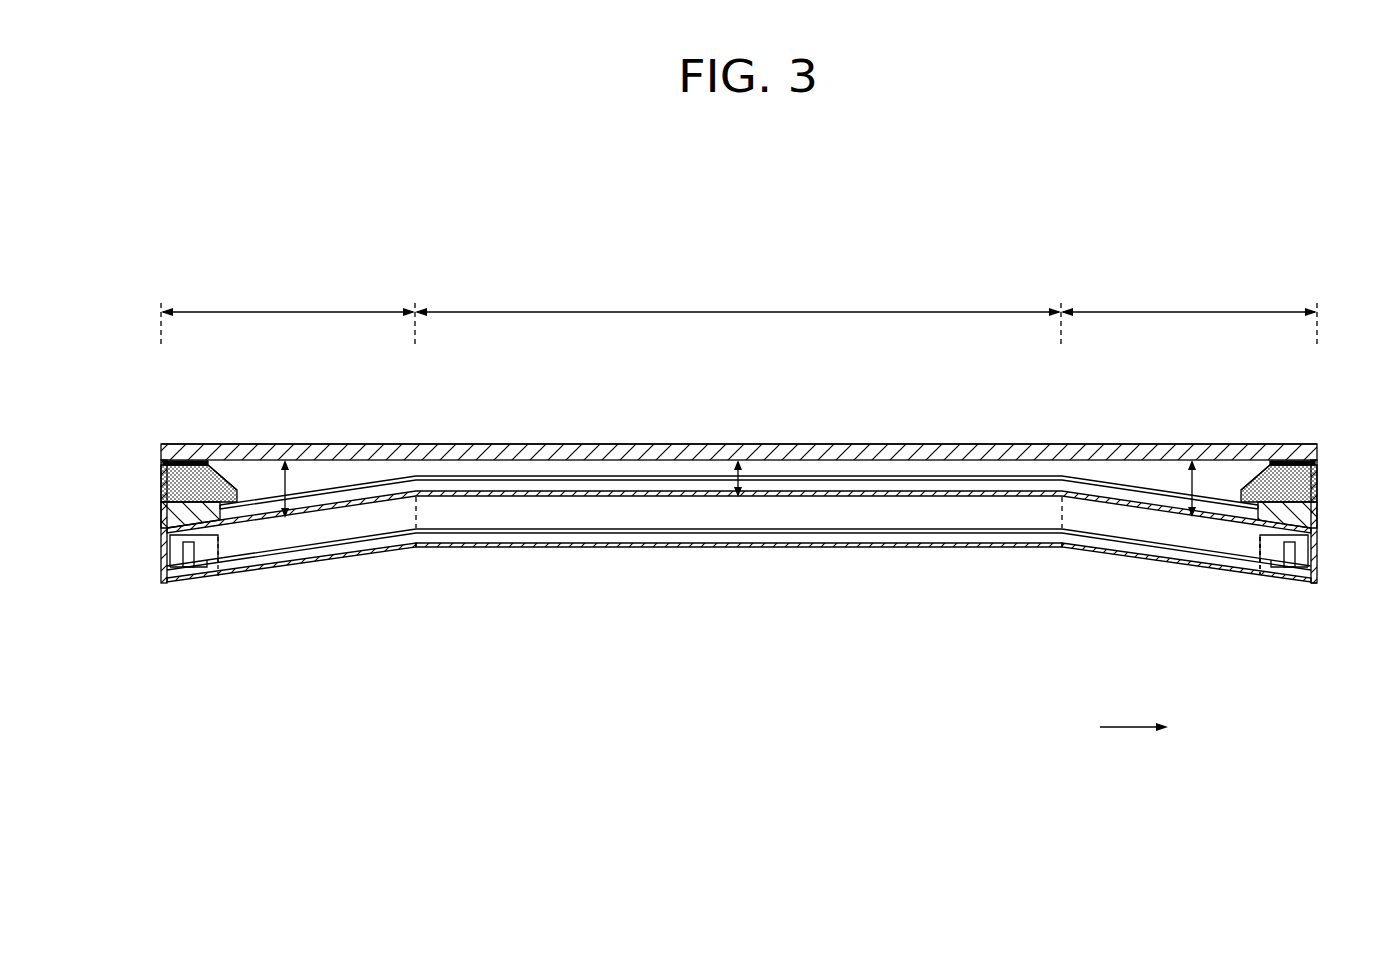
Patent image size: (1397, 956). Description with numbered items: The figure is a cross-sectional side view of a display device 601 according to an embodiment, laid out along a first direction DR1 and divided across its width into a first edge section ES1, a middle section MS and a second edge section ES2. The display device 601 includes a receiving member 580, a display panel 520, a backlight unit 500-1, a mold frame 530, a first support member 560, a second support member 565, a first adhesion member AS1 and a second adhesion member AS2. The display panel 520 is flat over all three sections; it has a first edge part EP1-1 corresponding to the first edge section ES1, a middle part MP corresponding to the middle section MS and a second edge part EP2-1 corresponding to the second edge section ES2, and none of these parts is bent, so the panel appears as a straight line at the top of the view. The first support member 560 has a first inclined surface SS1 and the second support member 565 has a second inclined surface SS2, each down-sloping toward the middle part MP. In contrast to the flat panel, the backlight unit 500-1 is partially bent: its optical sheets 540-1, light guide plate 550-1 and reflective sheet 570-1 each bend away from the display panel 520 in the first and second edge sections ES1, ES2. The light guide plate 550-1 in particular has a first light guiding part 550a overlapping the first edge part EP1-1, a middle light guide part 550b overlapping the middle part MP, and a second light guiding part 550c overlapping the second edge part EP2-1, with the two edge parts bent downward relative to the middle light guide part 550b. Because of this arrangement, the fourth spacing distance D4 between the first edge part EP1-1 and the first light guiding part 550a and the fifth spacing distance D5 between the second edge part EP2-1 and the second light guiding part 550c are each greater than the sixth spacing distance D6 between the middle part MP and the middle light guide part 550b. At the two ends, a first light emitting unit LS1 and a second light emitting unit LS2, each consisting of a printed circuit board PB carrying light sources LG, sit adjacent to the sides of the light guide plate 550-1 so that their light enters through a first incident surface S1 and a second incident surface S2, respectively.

The display device 601 is at (1285, 224).
The window / cover member 520 is at (1323, 449).
The first support member 560 is at (170, 486).
The second support member 565 is at (1308, 486).
The mold frame 530 is at (168, 518).
The receiving member 580 is at (1311, 550).
The first light guiding part 550a is at (328, 540).
The middle light guide part 550b is at (664, 515).
The second light guiding part 550c is at (1154, 553).
The optical sheets 540-1 is at (791, 478).
The light guide plate 550-1 is at (861, 516).
The reflective sheet 570-1 is at (760, 612).
The backlight unit 500-1 is at (739, 564).
The first adhesion member AS1 is at (160, 462).
The second adhesion member AS2 is at (1318, 463).
The first inclined surface SS1 is at (230, 478).
The second inclined surface SS2 is at (1243, 486).
The first edge part EP1-1 is at (313, 452).
The second edge part EP2-1 is at (1130, 452).
The middle part MP is at (636, 444).
The fourth spacing distance D4 is at (297, 489).
The fifth spacing distance D5 is at (1205, 488).
The sixth spacing distance D6 is at (738, 460).
The first edge section ES1 is at (288, 315).
The middle section MS is at (738, 299).
The second edge section ES2 is at (1189, 315).
The light sources LG is at (163, 587).
The printed circuit board PB is at (190, 572).
The first incident surface S1 is at (218, 580).
The second incident surface S2 is at (1262, 578).
The first light emitting unit LS1 is at (736, 613).
The second light emitting unit LS2 is at (1343, 651).
The first direction DR1 is at (1154, 728).